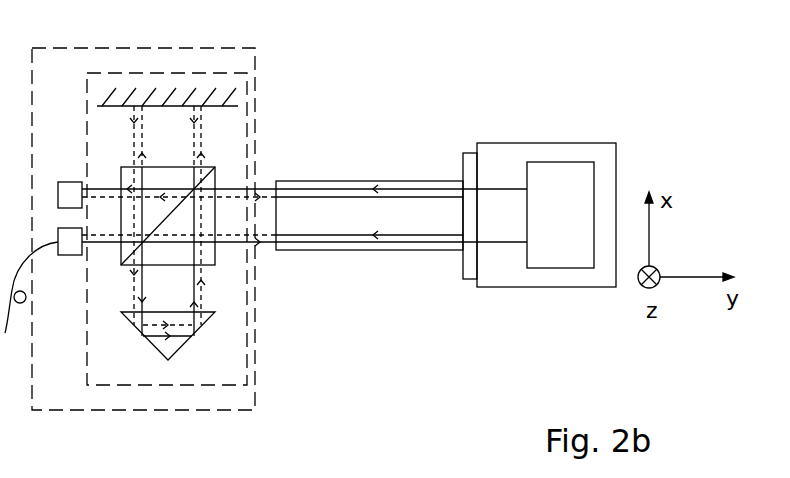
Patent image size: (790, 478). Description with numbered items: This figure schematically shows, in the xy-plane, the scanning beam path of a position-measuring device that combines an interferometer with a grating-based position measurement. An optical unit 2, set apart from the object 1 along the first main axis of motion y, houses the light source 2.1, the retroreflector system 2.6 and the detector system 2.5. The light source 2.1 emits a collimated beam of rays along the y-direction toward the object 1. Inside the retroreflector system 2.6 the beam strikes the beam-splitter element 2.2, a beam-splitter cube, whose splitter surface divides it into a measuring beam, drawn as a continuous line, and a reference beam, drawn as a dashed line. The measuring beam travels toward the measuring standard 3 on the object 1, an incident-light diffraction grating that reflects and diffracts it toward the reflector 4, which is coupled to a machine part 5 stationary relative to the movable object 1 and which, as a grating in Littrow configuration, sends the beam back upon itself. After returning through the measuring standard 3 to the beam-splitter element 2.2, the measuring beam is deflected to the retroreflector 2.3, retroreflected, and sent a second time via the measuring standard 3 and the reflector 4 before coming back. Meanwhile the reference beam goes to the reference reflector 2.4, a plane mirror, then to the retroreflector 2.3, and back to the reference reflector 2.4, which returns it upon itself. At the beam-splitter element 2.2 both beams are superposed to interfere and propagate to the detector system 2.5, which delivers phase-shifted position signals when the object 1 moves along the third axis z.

The object 1 is at (594, 280).
The optical unit 2 is at (55, 400).
The light source 2.1 is at (73, 257).
The beam-splitter element 2.2 is at (126, 174).
The retroreflector 2.3 is at (170, 352).
The reference reflector 2.4 is at (215, 107).
The detector system 2.5 is at (70, 186).
The retroreflector system 2.6 is at (173, 387).
The measuring standard 3 is at (468, 279).
The reflector 4 is at (320, 180).
The machine part 5 is at (572, 168).